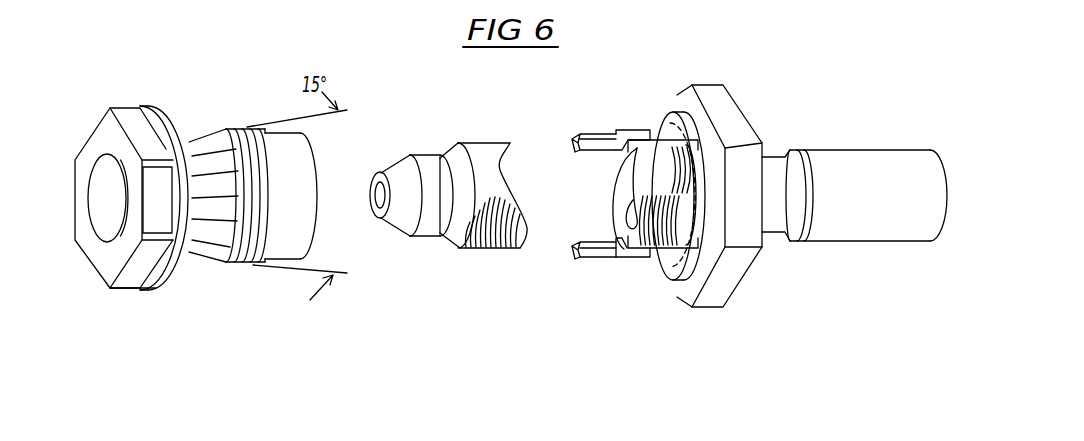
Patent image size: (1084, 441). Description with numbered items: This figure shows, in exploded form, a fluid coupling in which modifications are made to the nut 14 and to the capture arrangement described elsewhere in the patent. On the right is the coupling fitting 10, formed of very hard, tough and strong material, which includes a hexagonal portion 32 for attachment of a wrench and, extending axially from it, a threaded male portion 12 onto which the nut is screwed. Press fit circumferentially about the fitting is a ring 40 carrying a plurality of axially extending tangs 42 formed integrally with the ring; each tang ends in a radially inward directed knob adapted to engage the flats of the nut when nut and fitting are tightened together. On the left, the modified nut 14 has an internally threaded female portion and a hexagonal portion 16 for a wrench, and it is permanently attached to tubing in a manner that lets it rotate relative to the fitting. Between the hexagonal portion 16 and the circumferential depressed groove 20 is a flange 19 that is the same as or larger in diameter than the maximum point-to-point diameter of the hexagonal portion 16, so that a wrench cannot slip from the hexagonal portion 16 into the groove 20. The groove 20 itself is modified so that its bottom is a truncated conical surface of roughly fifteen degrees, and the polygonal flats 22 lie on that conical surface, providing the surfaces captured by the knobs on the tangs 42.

The nut 14 is at (82, 160).
The hexagonal portion 16 is at (122, 283).
The flange 19 is at (157, 122).
The circumferential depressed groove 20 is at (197, 253).
The polygonal groove flats 22 is at (197, 143).
The threaded male portion 12 is at (478, 150).
The hexagonal portion 32 is at (740, 133).
The ring 40 is at (667, 277).
The tangs 42 is at (640, 253).
The coupling fitting 10 is at (847, 160).